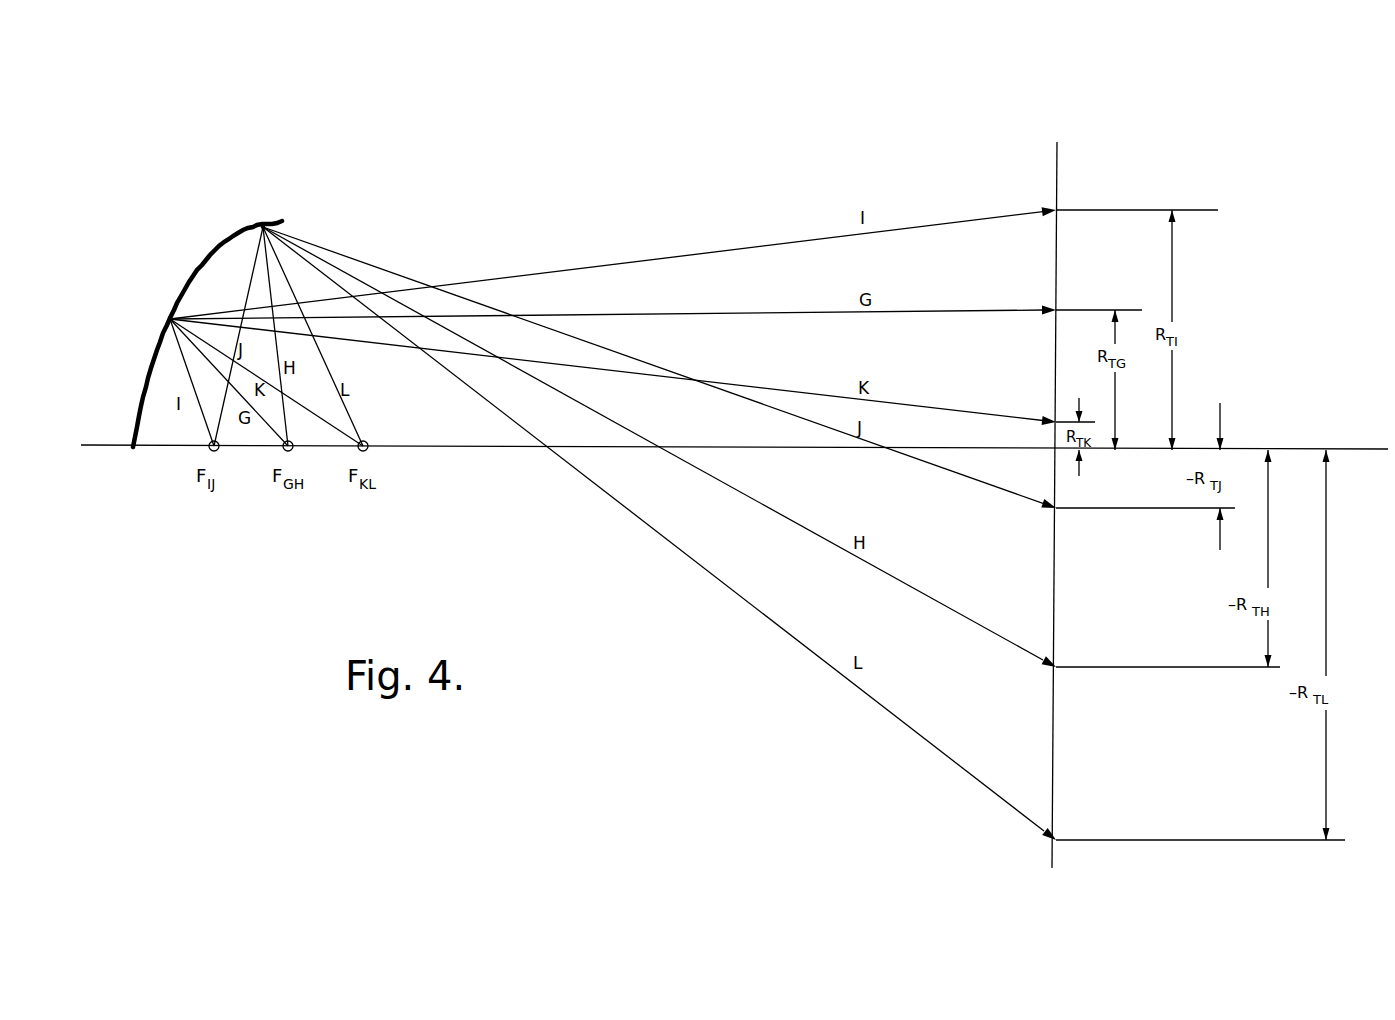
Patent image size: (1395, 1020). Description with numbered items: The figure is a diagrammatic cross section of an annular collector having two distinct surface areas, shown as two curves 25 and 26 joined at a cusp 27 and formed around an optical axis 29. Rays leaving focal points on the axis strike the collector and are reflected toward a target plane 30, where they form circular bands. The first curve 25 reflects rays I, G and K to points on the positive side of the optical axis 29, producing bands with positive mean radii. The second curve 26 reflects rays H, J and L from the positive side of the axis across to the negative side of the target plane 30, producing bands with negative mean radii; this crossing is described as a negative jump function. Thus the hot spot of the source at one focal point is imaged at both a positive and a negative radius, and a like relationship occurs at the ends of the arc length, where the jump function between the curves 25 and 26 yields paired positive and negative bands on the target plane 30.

The curve 25 is at (160, 332).
The curve 26 is at (250, 226).
The cusp 27 is at (203, 259).
The optical axis 29 is at (507, 450).
The target plane 30 is at (1057, 165).